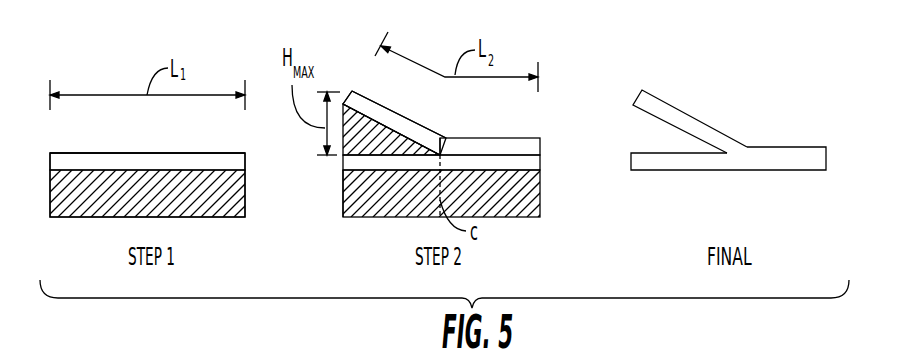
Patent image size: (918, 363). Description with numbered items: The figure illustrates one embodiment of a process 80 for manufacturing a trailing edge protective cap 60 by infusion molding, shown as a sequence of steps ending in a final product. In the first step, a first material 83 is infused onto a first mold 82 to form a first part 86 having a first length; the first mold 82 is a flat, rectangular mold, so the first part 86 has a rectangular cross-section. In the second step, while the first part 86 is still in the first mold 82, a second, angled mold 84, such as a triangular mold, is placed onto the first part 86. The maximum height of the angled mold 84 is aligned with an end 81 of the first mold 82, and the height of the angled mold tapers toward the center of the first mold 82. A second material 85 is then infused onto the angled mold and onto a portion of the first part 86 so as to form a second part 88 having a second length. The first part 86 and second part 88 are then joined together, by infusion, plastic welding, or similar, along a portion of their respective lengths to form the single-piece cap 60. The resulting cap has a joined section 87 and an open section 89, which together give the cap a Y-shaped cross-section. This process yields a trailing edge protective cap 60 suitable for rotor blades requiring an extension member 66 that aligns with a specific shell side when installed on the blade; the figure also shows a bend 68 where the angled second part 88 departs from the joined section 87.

The trailing edge protective cap 60 is at (559, 127).
The extension member 66 is at (504, 137).
The bend 68 is at (443, 142).
The process 80 is at (91, 72).
The end 81 is at (343, 203).
The first mold 82 is at (113, 218).
The first material 83 is at (192, 163).
The second, angled mold 84 is at (340, 107).
The second material 85 is at (375, 112).
The first part 86 is at (143, 161).
The joined section 87 is at (789, 158).
The second part 88 is at (417, 130).
The open section 89 is at (637, 128).